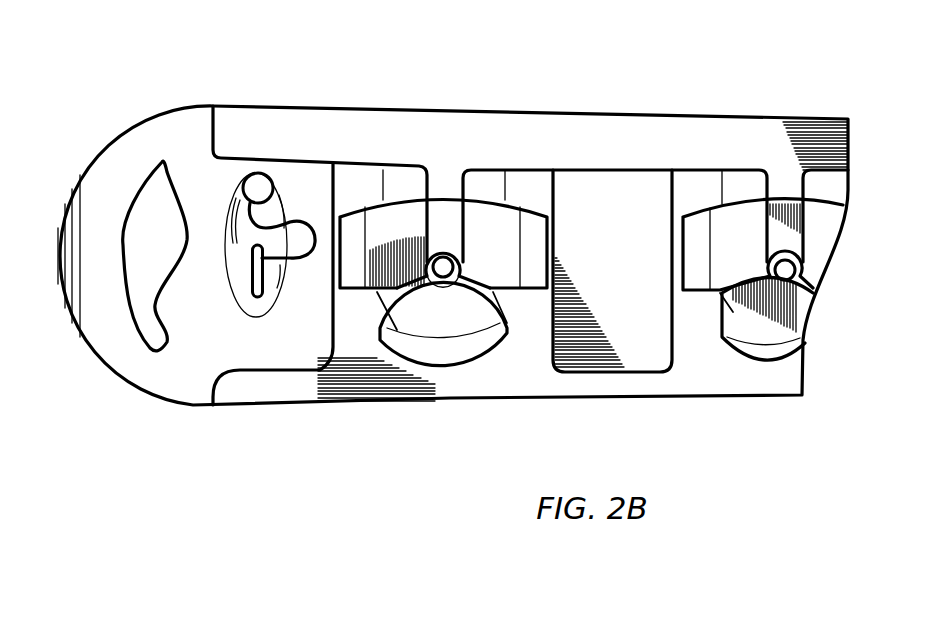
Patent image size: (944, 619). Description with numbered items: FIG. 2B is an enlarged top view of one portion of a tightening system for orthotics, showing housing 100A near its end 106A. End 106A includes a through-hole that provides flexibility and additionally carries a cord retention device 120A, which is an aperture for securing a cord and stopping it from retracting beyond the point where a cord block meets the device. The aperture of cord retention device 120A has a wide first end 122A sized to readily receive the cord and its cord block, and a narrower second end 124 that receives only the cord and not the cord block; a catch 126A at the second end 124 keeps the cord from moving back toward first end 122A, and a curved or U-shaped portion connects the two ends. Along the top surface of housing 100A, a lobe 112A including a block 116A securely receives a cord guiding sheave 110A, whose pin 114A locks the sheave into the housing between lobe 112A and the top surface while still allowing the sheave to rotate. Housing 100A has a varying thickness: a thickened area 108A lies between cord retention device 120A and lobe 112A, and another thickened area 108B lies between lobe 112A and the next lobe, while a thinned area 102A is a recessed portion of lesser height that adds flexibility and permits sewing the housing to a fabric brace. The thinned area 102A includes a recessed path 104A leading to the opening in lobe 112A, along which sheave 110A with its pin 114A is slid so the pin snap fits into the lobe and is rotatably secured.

The housing 100A is at (760, 373).
The thinned area 102A is at (777, 146).
The recessed path 104A is at (445, 185).
The end 106A is at (102, 197).
The thickened area 108A is at (310, 357).
The thickened area 108B is at (638, 350).
The cord guiding sheave 110A is at (505, 302).
The lobe 112A is at (390, 225).
The pin 114A is at (444, 258).
The block 116A is at (445, 357).
The cord retention device 120A is at (259, 172).
The first end 122A is at (240, 188).
The pin 124 is at (259, 298).
The catch 126A is at (252, 252).